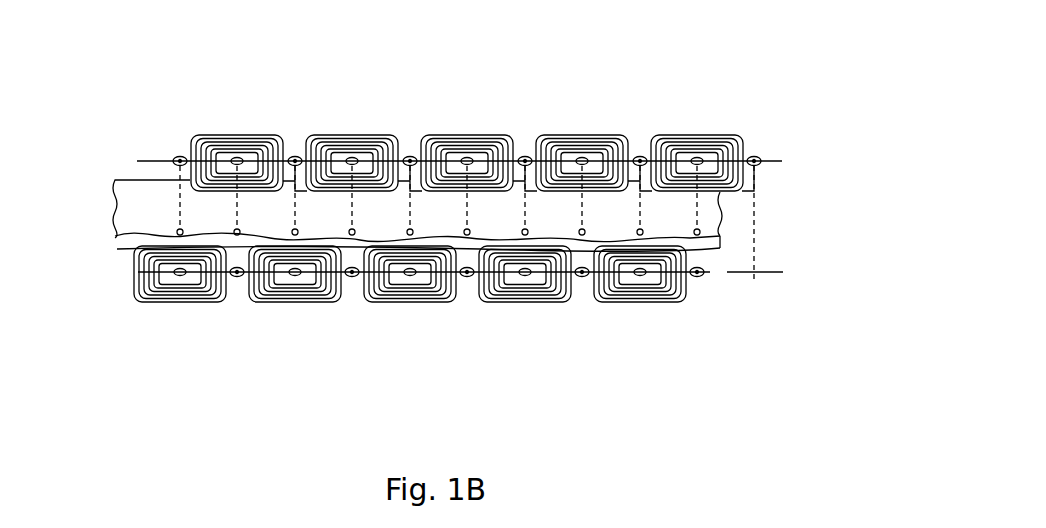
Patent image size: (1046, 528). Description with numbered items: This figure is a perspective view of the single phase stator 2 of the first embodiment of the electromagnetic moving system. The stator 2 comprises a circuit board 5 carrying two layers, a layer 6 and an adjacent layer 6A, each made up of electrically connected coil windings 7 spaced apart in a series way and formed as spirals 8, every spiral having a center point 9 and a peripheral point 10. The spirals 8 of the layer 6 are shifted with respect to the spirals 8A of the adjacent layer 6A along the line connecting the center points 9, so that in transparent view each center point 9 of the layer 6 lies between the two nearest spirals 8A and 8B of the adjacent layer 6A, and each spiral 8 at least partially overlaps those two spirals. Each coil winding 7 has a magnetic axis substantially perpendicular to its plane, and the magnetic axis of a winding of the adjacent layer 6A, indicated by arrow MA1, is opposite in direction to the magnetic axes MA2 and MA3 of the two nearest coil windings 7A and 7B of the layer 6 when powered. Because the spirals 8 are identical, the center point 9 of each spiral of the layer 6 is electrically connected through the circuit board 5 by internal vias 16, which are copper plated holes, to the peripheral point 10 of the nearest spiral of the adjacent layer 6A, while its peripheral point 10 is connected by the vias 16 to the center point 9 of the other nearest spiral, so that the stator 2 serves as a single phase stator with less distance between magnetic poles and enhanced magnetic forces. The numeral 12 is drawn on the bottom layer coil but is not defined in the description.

The stator 2 is at (812, 197).
The circuit board 5 is at (148, 205).
The layer 6 is at (195, 140).
The adjacent layer 6A is at (267, 296).
The coil winding 7 is at (310, 296).
The coil winding 7A is at (268, 134).
The coil winding 7B is at (407, 152).
The spiral 8 is at (488, 137).
The spiral 8A is at (440, 296).
The spiral 8B is at (507, 296).
The center point 9 is at (412, 152).
The peripheral point 10 is at (527, 152).
The coil conductor pattern 12 is at (210, 296).
The via 16 is at (115, 237).
The magnetization direction MA1 is at (295, 278).
The magnetization direction MA2 is at (352, 158).
The magnetization direction MA3 is at (237, 158).